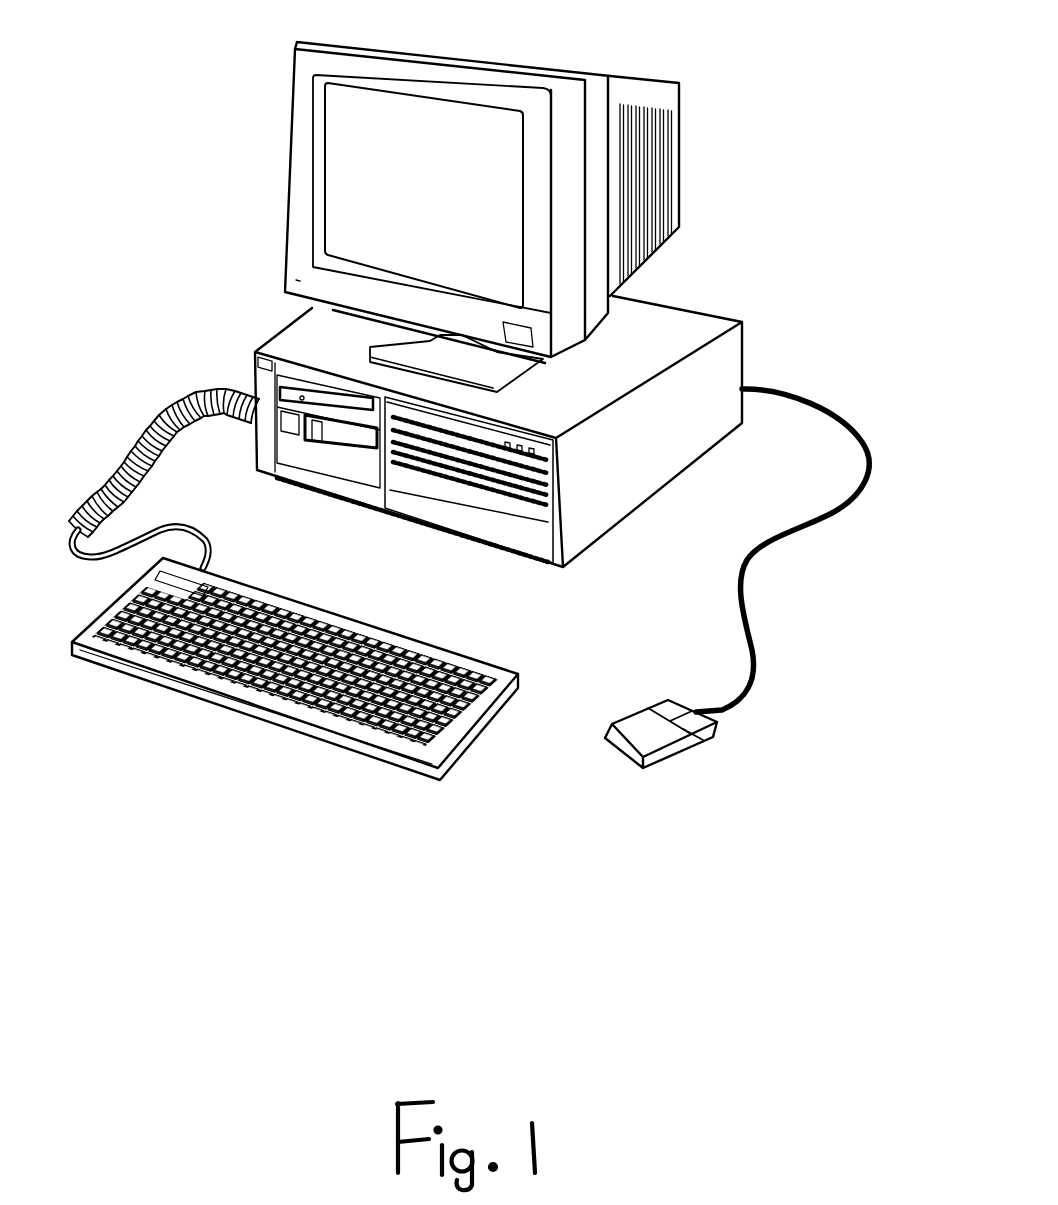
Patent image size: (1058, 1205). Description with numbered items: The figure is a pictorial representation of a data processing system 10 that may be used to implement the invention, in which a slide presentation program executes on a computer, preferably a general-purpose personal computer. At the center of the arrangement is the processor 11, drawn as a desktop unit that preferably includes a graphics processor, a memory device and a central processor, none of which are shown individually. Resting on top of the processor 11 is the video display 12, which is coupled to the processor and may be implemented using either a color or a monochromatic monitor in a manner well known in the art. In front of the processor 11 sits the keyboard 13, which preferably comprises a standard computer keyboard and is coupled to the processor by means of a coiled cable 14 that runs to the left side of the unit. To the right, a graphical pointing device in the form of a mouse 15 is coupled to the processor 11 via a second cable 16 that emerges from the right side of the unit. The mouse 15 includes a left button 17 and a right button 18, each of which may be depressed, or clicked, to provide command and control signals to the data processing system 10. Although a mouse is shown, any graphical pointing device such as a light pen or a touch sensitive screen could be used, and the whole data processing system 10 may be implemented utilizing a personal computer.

The data processing system 10 is at (845, 122).
The processor 11 is at (255, 363).
The video display 12 is at (290, 115).
The keyboard 13 is at (235, 715).
The cable 14 is at (133, 460).
The mouse 15 is at (610, 757).
The cable 16 is at (803, 541).
The left button 17 is at (670, 702).
The right button 18 is at (708, 725).